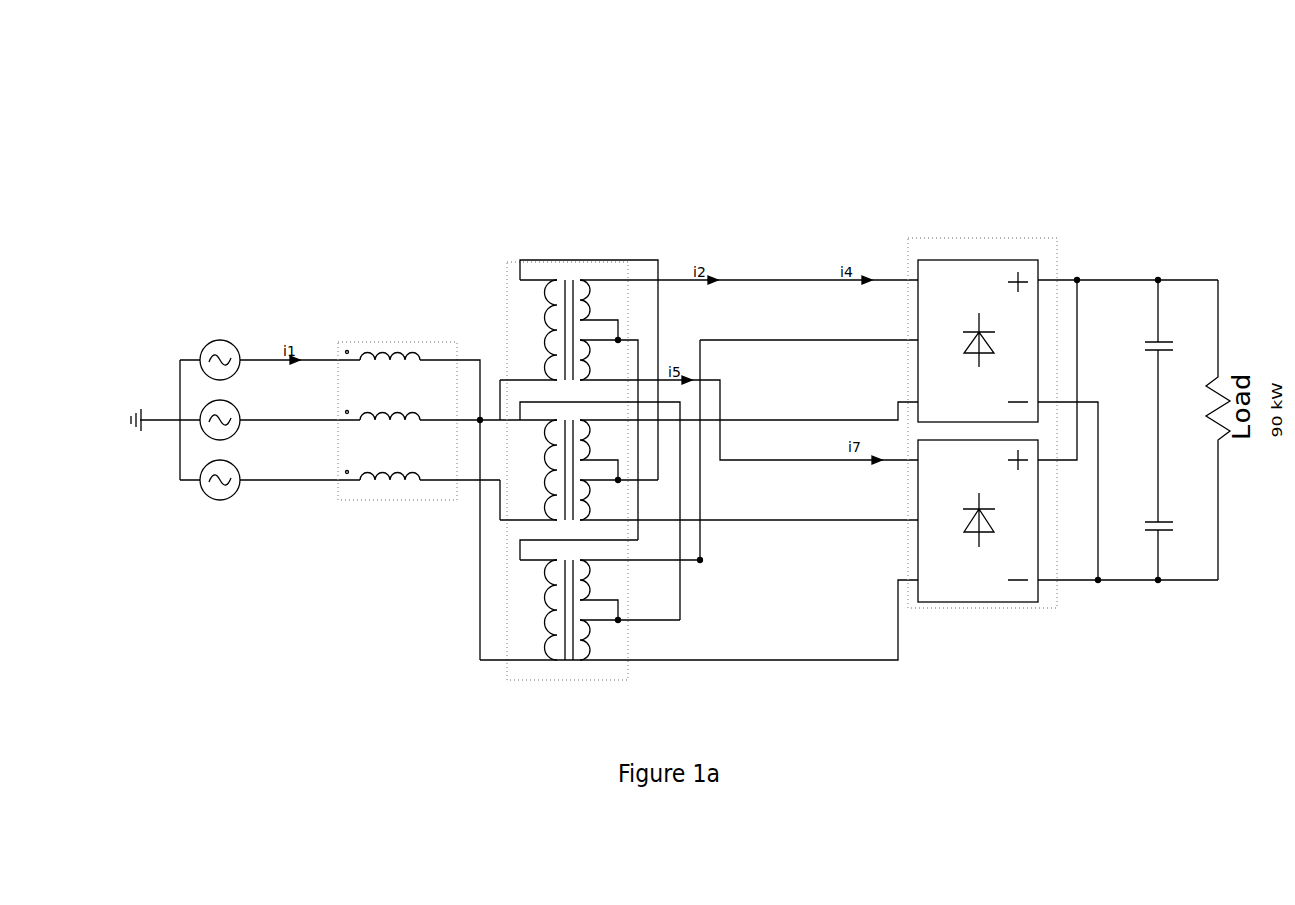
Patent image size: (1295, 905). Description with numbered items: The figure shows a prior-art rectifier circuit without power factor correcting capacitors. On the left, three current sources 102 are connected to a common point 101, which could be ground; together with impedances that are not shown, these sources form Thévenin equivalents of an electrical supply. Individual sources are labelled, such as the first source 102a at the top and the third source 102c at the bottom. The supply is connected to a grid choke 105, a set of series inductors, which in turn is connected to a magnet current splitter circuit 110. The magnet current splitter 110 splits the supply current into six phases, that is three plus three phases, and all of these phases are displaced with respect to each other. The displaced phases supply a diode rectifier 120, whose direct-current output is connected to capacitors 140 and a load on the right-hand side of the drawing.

The common point 101 is at (130, 431).
The current sources 102 is at (229, 418).
The first phase AC voltage source 102a is at (218, 340).
The third phase AC voltage source 102c is at (247, 492).
The grid choke 105 is at (404, 503).
The magnet current splitter circuit 110 is at (505, 260).
The diode rectifier 120 is at (995, 235).
The DC link capacitors 140 is at (1178, 345).